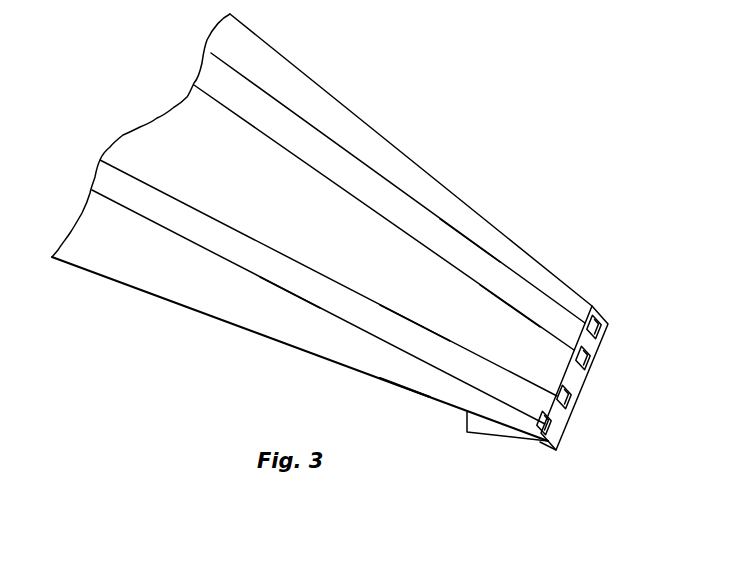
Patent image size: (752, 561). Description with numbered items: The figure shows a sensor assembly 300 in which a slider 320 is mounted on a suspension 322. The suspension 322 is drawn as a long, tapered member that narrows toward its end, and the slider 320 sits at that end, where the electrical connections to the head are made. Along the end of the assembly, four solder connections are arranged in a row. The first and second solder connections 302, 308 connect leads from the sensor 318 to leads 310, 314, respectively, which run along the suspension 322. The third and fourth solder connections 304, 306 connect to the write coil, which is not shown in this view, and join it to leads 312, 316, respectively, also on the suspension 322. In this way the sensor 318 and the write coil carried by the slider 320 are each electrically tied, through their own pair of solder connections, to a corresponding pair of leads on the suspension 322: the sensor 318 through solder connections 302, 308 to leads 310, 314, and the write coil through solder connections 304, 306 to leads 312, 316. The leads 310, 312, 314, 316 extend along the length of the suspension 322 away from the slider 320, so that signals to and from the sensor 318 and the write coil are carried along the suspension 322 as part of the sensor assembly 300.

The sensor assembly 300 is at (190, 375).
The first solder connection 302 is at (545, 442).
The third solder connection 304 is at (568, 412).
The fourth solder connection 306 is at (592, 358).
The second solder connection 308 is at (608, 323).
The lead 310 is at (288, 288).
The lead 312 is at (415, 318).
The lead 314 is at (468, 236).
The lead 316 is at (515, 306).
The sensor 318 is at (590, 386).
The slider 320 is at (495, 430).
The suspension 322 is at (408, 388).